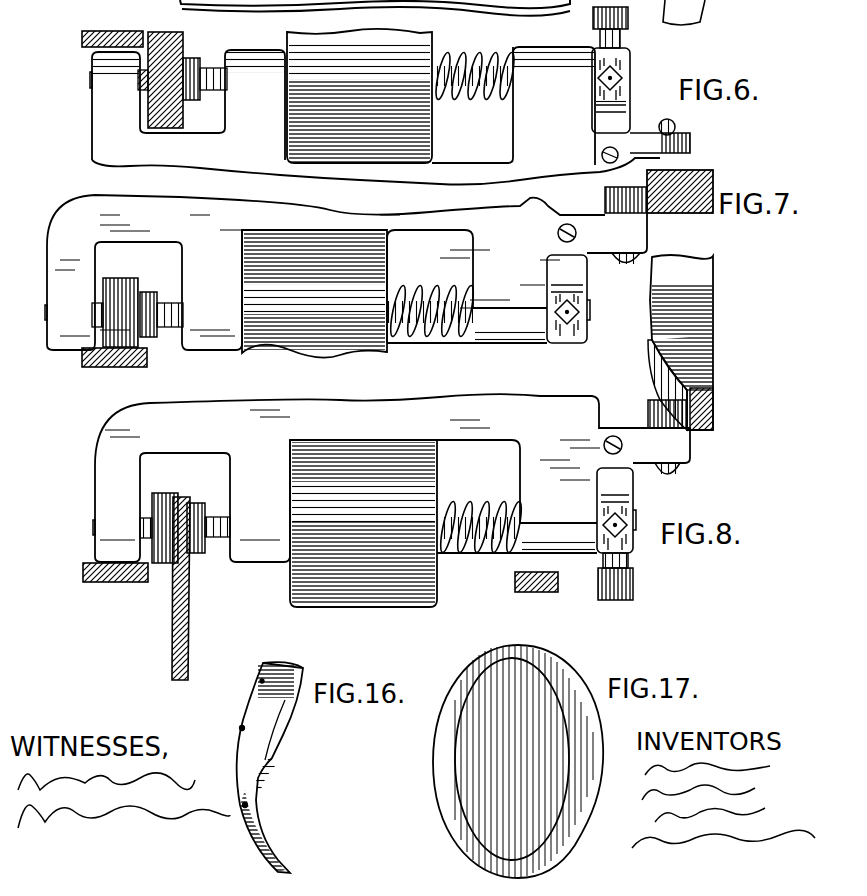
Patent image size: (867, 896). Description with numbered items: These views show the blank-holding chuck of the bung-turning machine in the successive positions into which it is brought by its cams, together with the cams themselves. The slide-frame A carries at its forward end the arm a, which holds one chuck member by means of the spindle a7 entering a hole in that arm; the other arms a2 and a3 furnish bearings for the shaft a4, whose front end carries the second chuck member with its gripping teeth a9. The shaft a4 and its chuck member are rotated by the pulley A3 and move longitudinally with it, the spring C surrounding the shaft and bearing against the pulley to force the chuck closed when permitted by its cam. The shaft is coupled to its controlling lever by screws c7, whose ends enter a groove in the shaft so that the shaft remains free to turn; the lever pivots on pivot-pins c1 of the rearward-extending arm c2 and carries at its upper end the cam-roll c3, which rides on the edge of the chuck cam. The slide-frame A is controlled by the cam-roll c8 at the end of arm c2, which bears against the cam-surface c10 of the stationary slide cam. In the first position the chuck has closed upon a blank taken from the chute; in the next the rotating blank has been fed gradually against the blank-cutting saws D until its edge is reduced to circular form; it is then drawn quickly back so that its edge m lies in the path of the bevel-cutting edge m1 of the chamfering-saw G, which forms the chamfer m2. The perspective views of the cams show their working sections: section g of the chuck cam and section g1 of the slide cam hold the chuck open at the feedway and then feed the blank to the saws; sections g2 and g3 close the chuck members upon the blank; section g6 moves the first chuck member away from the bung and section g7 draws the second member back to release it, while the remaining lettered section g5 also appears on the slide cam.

In FIG. 7, the slide-frame A is at (347, 272).
In FIG. 6, the pulley A3 is at (359, 96).
In FIG. 7, the pulley A3 is at (314, 294).
In FIG. 7, the spring C is at (467, 286).
In FIG. 6, the blank-cutting saws D is at (104, 30).
In FIG. 7, the blank-cutting saws D is at (109, 368).
In FIG. 8, the blank-cutting saws D is at (110, 583).
In FIG. 8, the chamfering-saw G is at (190, 650).
In FIG. 6, the arm or standard a is at (116, 92).
In FIG. 7, the arm or standard a is at (71, 293).
In FIG. 6, the arm or standard a2 is at (255, 91).
In FIG. 6, the arm or standard a3 is at (554, 106).
In FIG. 7, the shaft a4 is at (177, 327).
In FIG. 6, the spindle a7 is at (92, 79).
In FIG. 6, the teeth a9 is at (182, 95).
In FIG. 8, the pivot-pins c1 is at (560, 582).
In FIG. 16, the pivot-pins c1 is at (251, 737).
In FIG. 7, the rearward-extending arm c2 is at (715, 310).
In FIG. 17, the rearward-extending arm c2 is at (492, 738).
In FIG. 6, the cam-roll c3 is at (595, 21).
In FIG. 8, the cam-roll c3 is at (635, 588).
In FIG. 6, the screws c7 is at (618, 77).
In FIG. 7, the cam-roll c8 is at (648, 414).
In FIG. 7, the cam-surface c10 is at (662, 357).
In FIG. 8, the edge of the blank m is at (193, 508).
In FIG. 8, the bevel-cutting edge m1 is at (190, 566).
In FIG. 8, the chamfer or bevel m2 is at (180, 496).
In FIG. 16, the cam section g is at (289, 705).
In FIG. 17, the cam section g1 is at (593, 712).
In FIG. 16, the cam section g2 is at (294, 663).
In FIG. 17, the cam section g3 is at (548, 660).
In FIG. 17, the ring side g5 is at (450, 752).
In FIG. 17, the cam section g6 is at (593, 767).
In FIG. 16, the cam section g7 is at (264, 782).